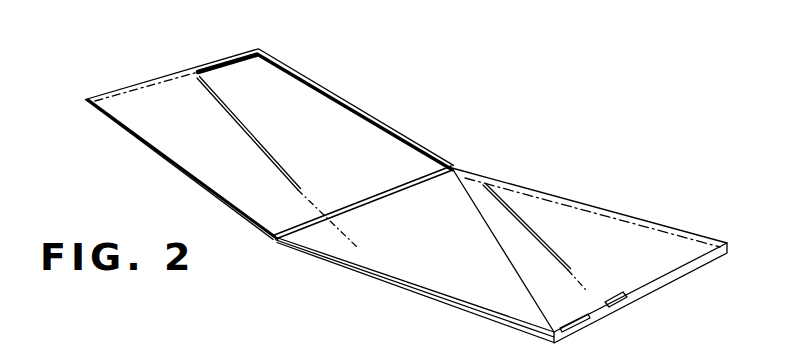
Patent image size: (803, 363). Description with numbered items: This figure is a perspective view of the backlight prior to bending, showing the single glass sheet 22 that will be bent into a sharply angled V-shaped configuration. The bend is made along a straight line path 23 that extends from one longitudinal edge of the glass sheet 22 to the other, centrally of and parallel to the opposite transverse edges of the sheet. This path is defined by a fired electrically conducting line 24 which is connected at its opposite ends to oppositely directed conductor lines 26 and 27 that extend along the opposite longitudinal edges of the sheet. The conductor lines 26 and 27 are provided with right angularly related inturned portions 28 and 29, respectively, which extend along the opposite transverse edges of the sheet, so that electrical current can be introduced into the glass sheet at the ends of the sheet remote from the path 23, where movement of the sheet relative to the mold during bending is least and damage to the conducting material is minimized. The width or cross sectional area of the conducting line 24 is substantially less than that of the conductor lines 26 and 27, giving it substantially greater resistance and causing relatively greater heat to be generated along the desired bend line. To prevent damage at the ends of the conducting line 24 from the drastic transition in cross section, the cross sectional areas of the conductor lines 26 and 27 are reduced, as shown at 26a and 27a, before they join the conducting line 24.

The glass sheet 22 is at (566, 192).
The straight line path 23 is at (338, 199).
The fired electrically conducting line 24 is at (384, 197).
The conductor line 26 is at (348, 103).
The reduced cross sectional area of conductor line 26a is at (453, 168).
The conductor line 27 is at (441, 292).
The reduced cross sectional area of conductor line 27a is at (277, 240).
The inturned portion 28 is at (200, 69).
The inturned portion 29 is at (608, 305).